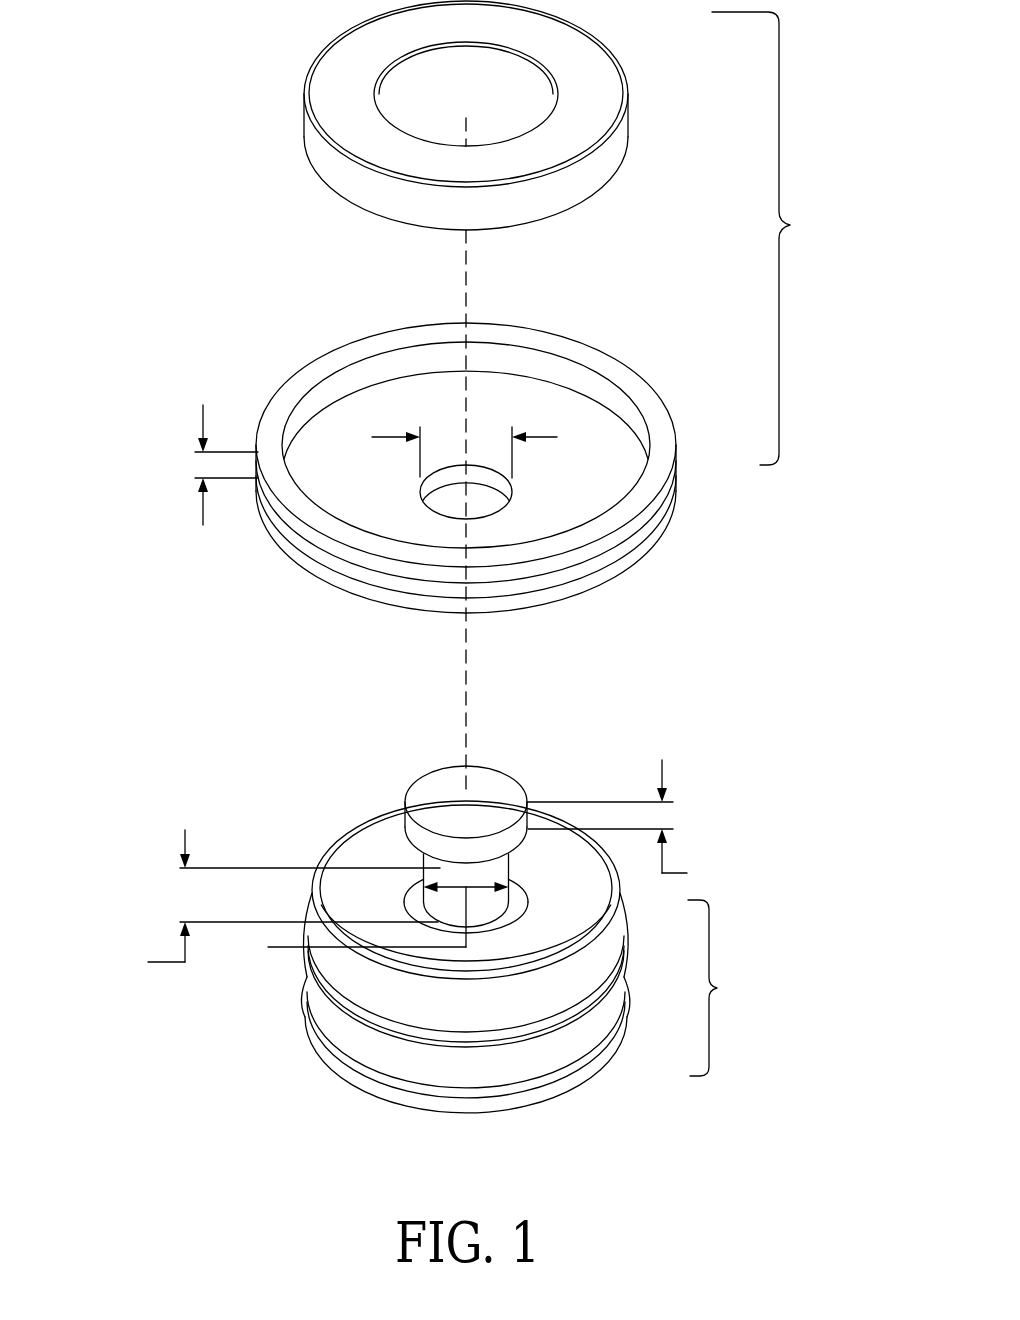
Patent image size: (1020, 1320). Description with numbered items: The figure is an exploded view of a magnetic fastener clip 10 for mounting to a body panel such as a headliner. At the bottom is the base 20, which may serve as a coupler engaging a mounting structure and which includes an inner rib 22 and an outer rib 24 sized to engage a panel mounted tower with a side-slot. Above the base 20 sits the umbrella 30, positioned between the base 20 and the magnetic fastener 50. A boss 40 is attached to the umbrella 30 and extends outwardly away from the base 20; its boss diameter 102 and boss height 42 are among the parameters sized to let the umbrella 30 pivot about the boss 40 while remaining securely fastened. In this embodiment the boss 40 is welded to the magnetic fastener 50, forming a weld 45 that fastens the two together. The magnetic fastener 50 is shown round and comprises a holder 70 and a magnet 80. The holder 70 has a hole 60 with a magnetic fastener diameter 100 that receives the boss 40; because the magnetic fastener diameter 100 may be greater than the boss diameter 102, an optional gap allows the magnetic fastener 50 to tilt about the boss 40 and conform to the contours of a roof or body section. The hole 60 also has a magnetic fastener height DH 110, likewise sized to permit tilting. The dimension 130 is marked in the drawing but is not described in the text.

The magnetic fastener clip 10 is at (122, 220).
The base 20 is at (725, 988).
The inner rib 22 is at (618, 940).
The outer rib 24 is at (615, 1043).
The umbrella 30 is at (333, 835).
The boss 40 is at (498, 878).
The boss height 42 is at (272, 906).
The weld 45 is at (440, 782).
The magnetic fastener 50 is at (776, 238).
The hole 60 is at (452, 503).
The holder 70 is at (660, 460).
The magnet 80 is at (593, 68).
The magnetic fastener diameter 100 is at (491, 450).
The boss diameter 102 is at (364, 923).
The magnetic fastener height 110 is at (219, 468).
The pin head height 130 is at (637, 809).